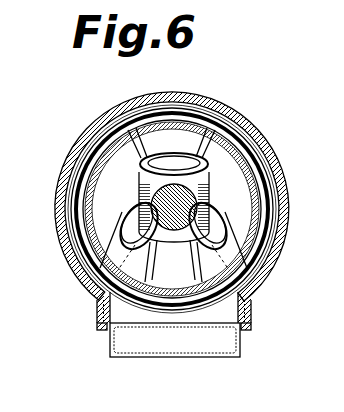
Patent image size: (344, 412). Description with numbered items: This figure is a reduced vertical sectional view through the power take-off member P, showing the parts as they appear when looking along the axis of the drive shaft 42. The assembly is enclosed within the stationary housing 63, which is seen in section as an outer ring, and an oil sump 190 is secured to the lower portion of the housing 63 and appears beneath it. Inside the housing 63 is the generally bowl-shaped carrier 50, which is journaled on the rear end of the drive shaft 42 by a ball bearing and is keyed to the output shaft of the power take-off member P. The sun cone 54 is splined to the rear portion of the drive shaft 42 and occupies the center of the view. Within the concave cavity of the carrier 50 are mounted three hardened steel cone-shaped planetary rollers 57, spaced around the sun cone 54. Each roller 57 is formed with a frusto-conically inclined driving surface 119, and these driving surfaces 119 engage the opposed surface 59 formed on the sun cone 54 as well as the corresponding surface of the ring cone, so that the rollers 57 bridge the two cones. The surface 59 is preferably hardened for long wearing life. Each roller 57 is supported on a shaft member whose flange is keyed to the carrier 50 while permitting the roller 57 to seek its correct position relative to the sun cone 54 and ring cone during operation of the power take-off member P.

The stationary housing 63 is at (232, 102).
The carrier 50 is at (283, 190).
The power take-off member P is at (90, 175).
The sun cone 54 is at (122, 192).
The driving surface 119 is at (172, 132).
The planetary roller 57 is at (220, 153).
The drive shaft 42 is at (203, 184).
The opposed surface 59 is at (138, 172).
The oil sump 190 is at (137, 357).